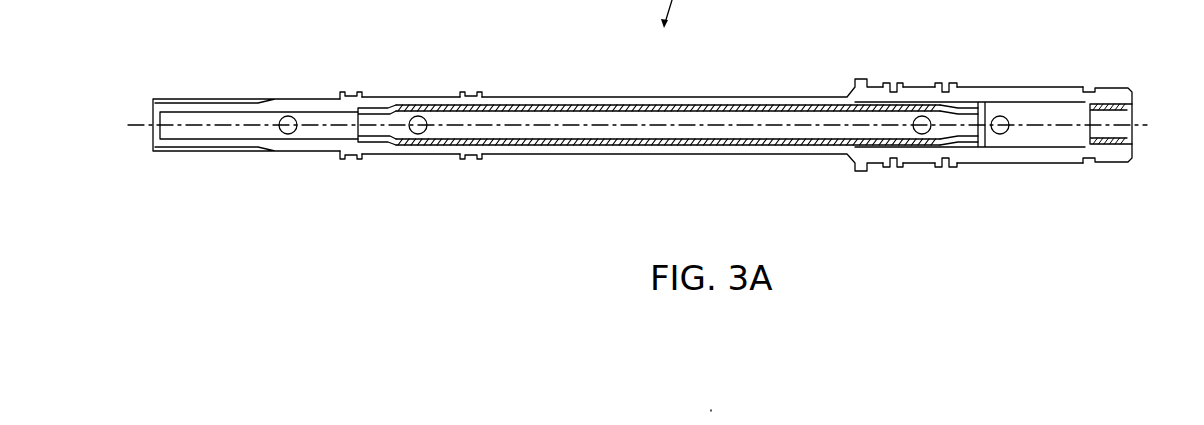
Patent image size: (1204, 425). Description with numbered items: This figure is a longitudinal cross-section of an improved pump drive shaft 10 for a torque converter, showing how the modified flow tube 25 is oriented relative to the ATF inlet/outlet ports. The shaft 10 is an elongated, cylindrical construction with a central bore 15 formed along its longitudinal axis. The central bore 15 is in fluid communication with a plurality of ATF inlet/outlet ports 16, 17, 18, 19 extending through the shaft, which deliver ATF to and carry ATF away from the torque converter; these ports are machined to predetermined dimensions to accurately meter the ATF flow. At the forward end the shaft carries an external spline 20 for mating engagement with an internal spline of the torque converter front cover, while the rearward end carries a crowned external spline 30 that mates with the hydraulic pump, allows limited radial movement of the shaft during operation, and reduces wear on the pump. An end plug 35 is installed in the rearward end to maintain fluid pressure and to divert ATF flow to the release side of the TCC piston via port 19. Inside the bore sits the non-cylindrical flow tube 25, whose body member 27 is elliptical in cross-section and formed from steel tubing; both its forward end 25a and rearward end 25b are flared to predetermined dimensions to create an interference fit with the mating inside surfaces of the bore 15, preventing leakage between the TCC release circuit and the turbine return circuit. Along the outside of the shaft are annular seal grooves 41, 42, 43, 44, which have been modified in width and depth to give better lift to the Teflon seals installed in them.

The pump drive shaft 10 is at (712, 408).
The central bore 15 is at (1045, 143).
The ATF inlet/outlet port 16 is at (292, 134).
The ATF inlet/outlet port 17 is at (418, 134).
The ATF inlet/outlet port 18 is at (922, 134).
The ATF inlet/outlet port 19 is at (1000, 134).
The external spline 20 is at (212, 98).
The flow tube 25 is at (714, 95).
The forward end of the flow tube 25a is at (372, 148).
The rearward end of the flow tube 25b is at (973, 146).
The body member 27 is at (657, 143).
The crowned external spline 30 is at (1108, 88).
The end plug 35 is at (1127, 116).
The annular seal groove 41 is at (352, 92).
The annular seal groove 42 is at (468, 92).
The annular seal groove 43 is at (893, 82).
The annular seal groove 44 is at (948, 82).